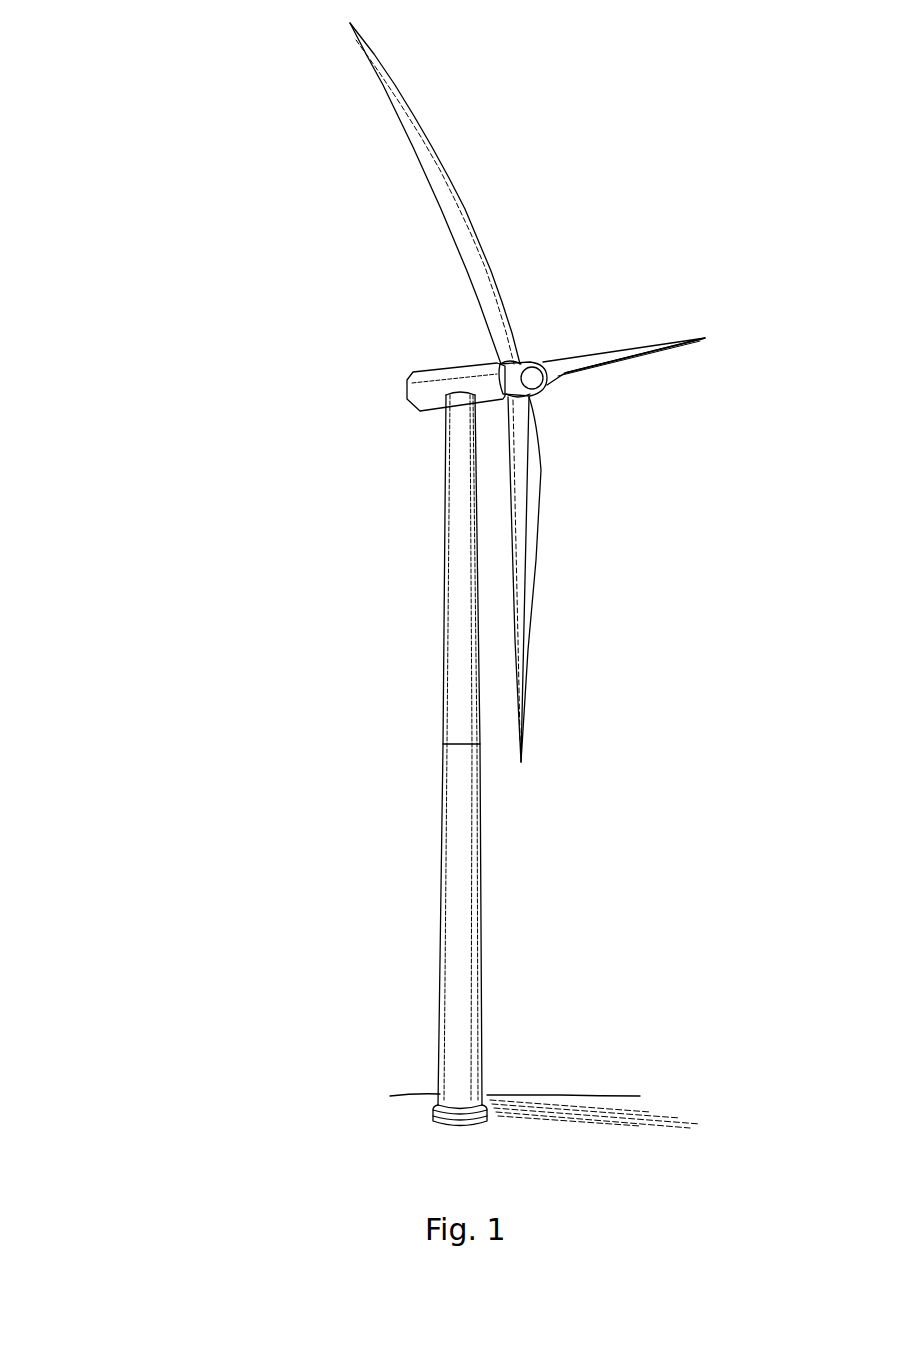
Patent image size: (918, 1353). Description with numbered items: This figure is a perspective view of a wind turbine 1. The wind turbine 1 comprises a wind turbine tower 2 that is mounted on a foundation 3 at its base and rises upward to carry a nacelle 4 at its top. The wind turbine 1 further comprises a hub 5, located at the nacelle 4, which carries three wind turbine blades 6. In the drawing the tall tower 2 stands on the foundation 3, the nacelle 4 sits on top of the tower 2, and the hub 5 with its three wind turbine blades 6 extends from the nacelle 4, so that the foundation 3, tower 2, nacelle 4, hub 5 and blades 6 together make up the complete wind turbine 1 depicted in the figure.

The wind turbine 1 is at (256, 611).
The wind turbine tower 2 is at (458, 1001).
The foundation 3 is at (493, 1106).
The nacelle 4 is at (442, 380).
The hub 5 is at (530, 368).
The wind turbine blades 6 is at (387, 102).